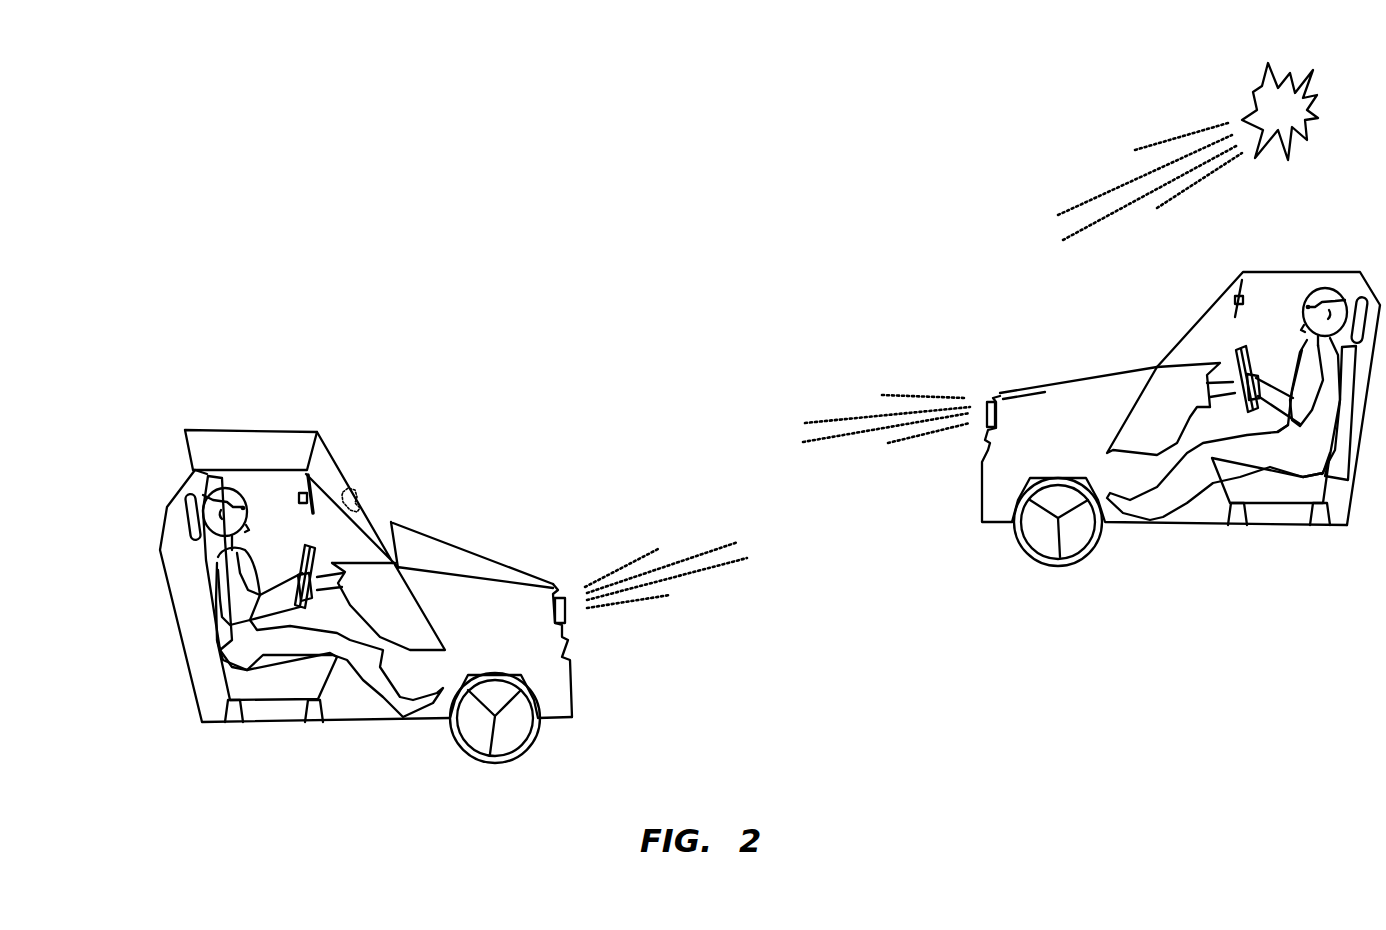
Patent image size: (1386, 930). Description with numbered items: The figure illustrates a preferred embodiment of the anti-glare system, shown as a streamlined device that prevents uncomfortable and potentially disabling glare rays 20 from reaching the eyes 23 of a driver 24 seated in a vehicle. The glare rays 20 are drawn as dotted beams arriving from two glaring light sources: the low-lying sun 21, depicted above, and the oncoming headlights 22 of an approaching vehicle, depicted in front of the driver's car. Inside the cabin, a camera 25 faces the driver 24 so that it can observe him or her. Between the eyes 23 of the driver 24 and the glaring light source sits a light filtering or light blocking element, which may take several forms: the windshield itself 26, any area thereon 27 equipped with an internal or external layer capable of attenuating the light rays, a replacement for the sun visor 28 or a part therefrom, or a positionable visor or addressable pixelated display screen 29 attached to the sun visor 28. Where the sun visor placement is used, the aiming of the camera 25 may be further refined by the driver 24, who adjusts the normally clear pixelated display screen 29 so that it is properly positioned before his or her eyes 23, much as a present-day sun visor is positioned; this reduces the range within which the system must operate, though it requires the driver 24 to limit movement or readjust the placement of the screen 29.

The glare rays 20 is at (913, 363).
The low-lying sun 21 is at (1240, 101).
The oncoming headlights 22 is at (940, 370).
The eyes 23 is at (221, 452).
The driver 24 is at (222, 599).
The camera 25 is at (264, 448).
The windshield 26 is at (475, 497).
The area on windshield 27 is at (387, 499).
The sun visor 28 is at (345, 444).
The addressable pixelated display screen 29 is at (378, 460).